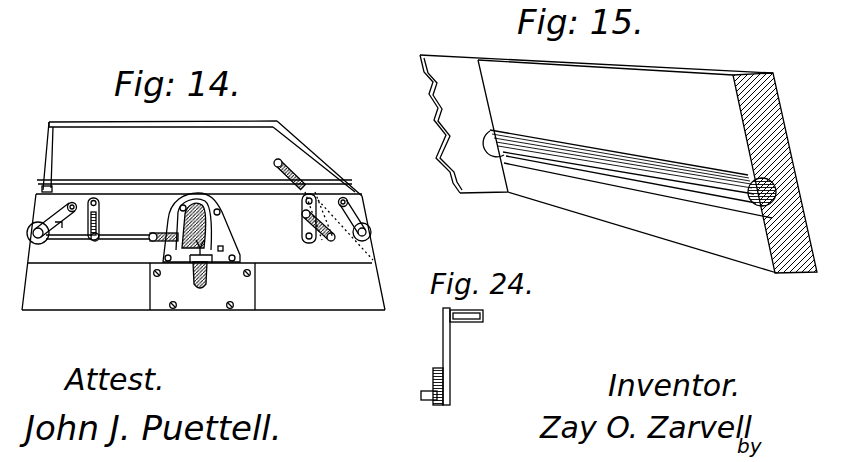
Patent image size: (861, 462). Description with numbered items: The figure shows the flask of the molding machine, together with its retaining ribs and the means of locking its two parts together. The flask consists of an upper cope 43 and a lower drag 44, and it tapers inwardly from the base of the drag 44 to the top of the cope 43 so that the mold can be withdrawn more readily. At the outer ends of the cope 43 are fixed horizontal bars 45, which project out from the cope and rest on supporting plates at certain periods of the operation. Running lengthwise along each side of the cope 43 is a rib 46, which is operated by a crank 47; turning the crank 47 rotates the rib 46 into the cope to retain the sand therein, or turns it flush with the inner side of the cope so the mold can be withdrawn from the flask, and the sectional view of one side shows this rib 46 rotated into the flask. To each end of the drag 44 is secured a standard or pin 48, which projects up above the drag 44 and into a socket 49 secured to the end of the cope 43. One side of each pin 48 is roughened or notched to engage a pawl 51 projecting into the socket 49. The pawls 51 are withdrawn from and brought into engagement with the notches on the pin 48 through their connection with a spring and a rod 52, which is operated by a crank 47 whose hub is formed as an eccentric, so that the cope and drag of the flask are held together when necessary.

In FIG. 14, the cope 43 is at (291, 224).
In FIG. 14, the drag 44 is at (203, 215).
In FIG. 14, the horizontal bar 45 is at (97, 232).
In FIG. 14, the rib 46 is at (312, 186).
In FIG. 15, the rib 46 is at (629, 174).
In FIG. 14, the crank 47 is at (35, 226).
In FIG. 24, the crank 47 is at (433, 386).
In FIG. 14, the standard or pin 48 is at (203, 288).
In FIG. 14, the socket 49 is at (236, 246).
In FIG. 14, the pawl 51 is at (162, 232).
In FIG. 14, the rod 52 is at (110, 241).